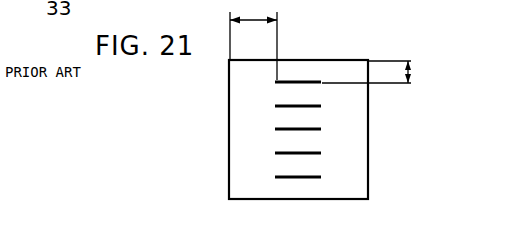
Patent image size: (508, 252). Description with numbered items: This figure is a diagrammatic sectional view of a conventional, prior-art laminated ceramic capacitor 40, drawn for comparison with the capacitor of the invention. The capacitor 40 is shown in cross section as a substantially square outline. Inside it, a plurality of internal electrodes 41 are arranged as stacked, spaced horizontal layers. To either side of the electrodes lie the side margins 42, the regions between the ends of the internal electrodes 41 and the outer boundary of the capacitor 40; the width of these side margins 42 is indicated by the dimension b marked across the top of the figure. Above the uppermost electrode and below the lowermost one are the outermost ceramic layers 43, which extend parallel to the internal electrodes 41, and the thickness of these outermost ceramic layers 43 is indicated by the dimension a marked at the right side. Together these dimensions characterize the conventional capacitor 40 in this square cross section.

The conventional laminated ceramic capacitor 40 is at (382, 160).
The internal electrodes 41 is at (275, 105).
The side margins 42 is at (238, 163).
The outermost ceramic layers 43 is at (307, 75).
The thickness of the outermost ceramic layers a is at (411, 73).
The width of the side margins b is at (253, 20).